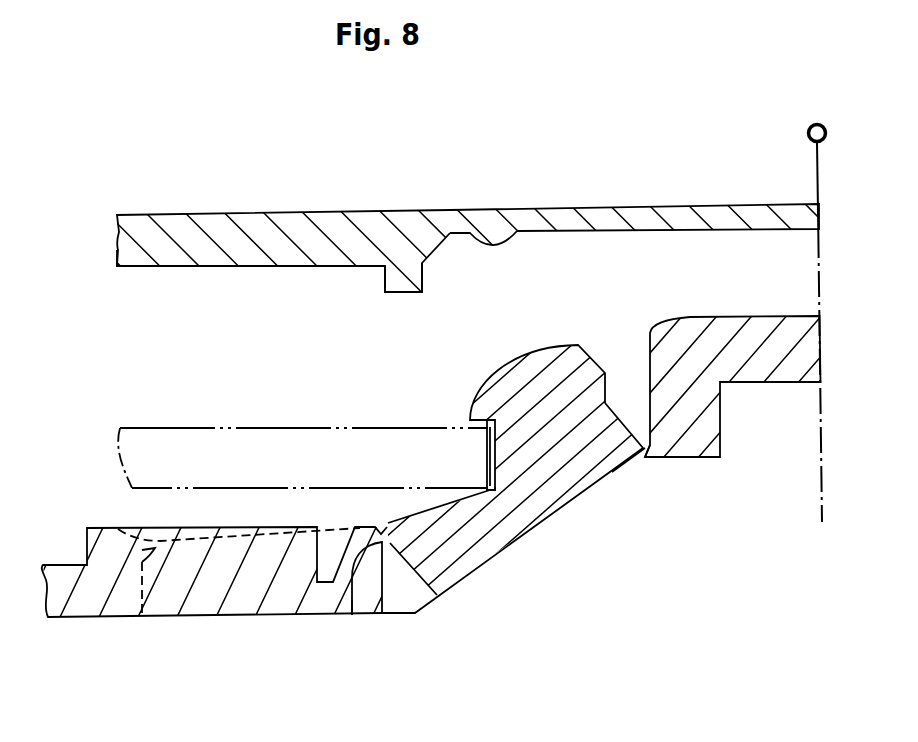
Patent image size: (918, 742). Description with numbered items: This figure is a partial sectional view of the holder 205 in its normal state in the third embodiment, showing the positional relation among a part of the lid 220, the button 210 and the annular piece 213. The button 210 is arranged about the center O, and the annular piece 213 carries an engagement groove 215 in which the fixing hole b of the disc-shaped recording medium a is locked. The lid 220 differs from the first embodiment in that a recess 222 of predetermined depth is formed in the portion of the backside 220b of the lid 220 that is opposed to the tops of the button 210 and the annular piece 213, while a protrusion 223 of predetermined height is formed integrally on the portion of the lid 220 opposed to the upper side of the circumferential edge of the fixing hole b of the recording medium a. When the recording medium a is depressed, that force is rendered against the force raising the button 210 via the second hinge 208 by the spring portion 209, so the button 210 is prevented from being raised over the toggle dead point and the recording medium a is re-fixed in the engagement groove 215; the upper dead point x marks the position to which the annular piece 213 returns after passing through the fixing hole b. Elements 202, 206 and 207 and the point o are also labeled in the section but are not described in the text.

The center O is at (817, 324).
The lid 220 is at (262, 221).
The backside of the lid 220b is at (148, 267).
The recess 222 is at (522, 232).
The protrusion 223 is at (393, 284).
The holder 205 is at (635, 263).
The button 210 is at (710, 320).
The second hinge 208 is at (650, 445).
The base body 202 is at (92, 607).
The spring portion 209 is at (117, 528).
The inclined wall 207 is at (585, 487).
The annular piece 213 is at (542, 380).
The engagement groove 215 is at (487, 452).
The pawl 206 is at (387, 518).
The disc-shaped recording medium a is at (157, 430).
The fixing hole b is at (490, 468).
The upper dead point x is at (640, 456).
The pivot o is at (352, 614).